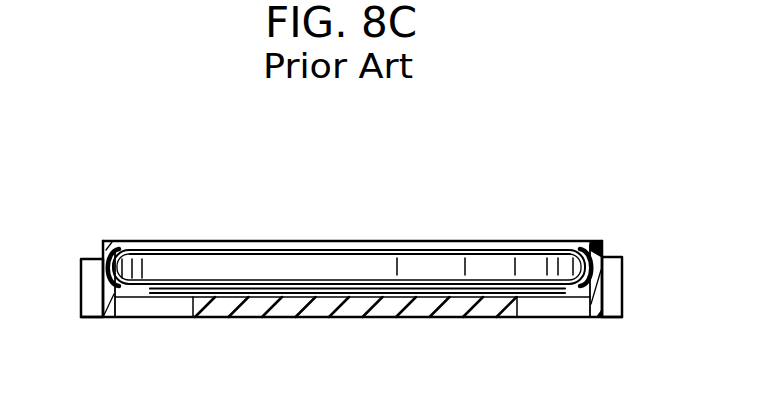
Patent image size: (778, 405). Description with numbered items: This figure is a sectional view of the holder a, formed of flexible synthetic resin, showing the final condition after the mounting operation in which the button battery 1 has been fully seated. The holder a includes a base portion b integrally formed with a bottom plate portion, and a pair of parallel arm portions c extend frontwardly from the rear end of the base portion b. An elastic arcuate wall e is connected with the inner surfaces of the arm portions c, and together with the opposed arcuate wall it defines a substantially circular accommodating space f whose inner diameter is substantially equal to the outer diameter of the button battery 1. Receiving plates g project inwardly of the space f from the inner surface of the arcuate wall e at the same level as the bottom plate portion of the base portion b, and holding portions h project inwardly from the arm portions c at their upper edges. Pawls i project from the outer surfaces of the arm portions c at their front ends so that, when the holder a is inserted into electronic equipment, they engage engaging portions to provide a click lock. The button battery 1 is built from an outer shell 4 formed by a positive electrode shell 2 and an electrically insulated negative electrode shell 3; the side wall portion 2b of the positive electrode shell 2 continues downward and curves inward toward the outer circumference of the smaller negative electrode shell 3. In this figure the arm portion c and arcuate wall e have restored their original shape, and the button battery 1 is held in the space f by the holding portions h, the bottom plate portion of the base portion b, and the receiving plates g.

The holder a is at (605, 240).
The button battery 1 is at (295, 240).
The arm portion c is at (100, 263).
The pawl i is at (87, 289).
The holding portion h is at (121, 255).
The outer shell 4 is at (349, 198).
The positive electrode shell 2 is at (360, 250).
The arcuate wall e is at (183, 248).
The side wall portion 2b is at (487, 270).
The negative electrode shell 3 is at (415, 283).
The base portion b is at (352, 342).
The accommodating space f is at (457, 302).
The receiving plate g is at (163, 308).